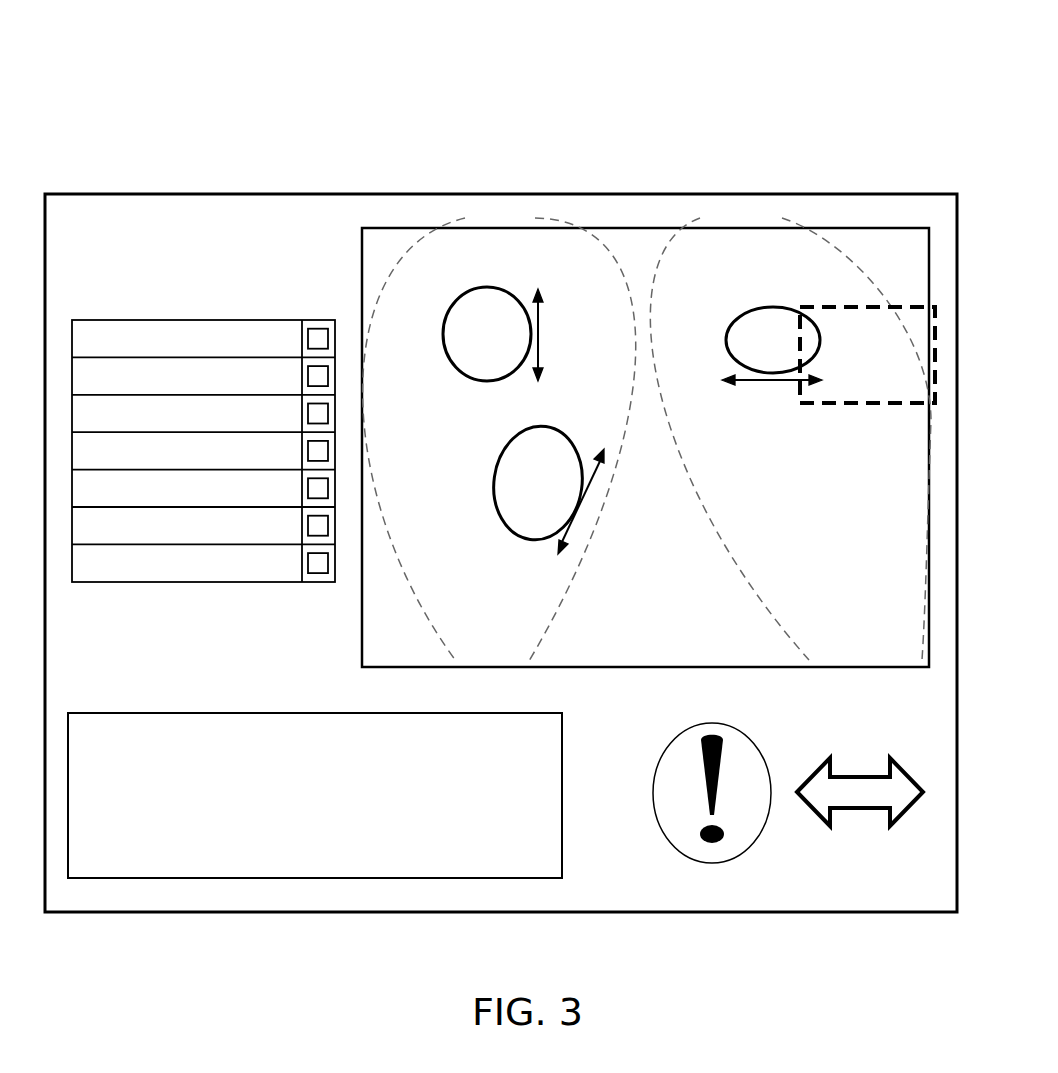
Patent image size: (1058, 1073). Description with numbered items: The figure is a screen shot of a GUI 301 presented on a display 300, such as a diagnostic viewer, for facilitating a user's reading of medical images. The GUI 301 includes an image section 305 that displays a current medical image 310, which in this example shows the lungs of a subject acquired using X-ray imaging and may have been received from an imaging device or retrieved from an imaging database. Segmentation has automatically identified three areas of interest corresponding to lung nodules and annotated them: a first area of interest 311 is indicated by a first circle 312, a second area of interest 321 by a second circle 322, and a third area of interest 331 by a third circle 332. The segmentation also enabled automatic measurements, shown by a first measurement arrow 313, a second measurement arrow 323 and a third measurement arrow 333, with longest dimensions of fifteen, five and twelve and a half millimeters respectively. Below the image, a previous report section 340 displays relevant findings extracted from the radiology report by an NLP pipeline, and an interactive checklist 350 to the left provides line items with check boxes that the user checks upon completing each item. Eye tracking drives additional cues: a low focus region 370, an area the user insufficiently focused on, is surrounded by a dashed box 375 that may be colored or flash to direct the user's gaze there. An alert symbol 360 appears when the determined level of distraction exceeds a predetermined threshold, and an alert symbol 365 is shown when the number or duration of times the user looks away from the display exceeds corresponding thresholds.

The display 300 is at (492, 32).
The GUI 301 is at (337, 195).
The image section 305 is at (628, 218).
The current medical image 310 is at (853, 213).
The first area of interest 311 is at (491, 312).
The first circle 312 is at (447, 316).
The first measurement arrow 313 is at (540, 325).
The second area of interest 321 is at (775, 324).
The second circle 322 is at (736, 314).
The second measurement arrow 323 is at (776, 380).
The third area of interest 331 is at (553, 452).
The third circle 332 is at (496, 492).
The third measurement arrow 333 is at (602, 456).
The previous report section 340 is at (562, 817).
The interactive checklist 350 is at (147, 320).
The alert symbol 360 is at (660, 760).
The alert symbol 365 is at (857, 775).
The low focus region 370 is at (873, 325).
The dashed box 375 is at (873, 405).